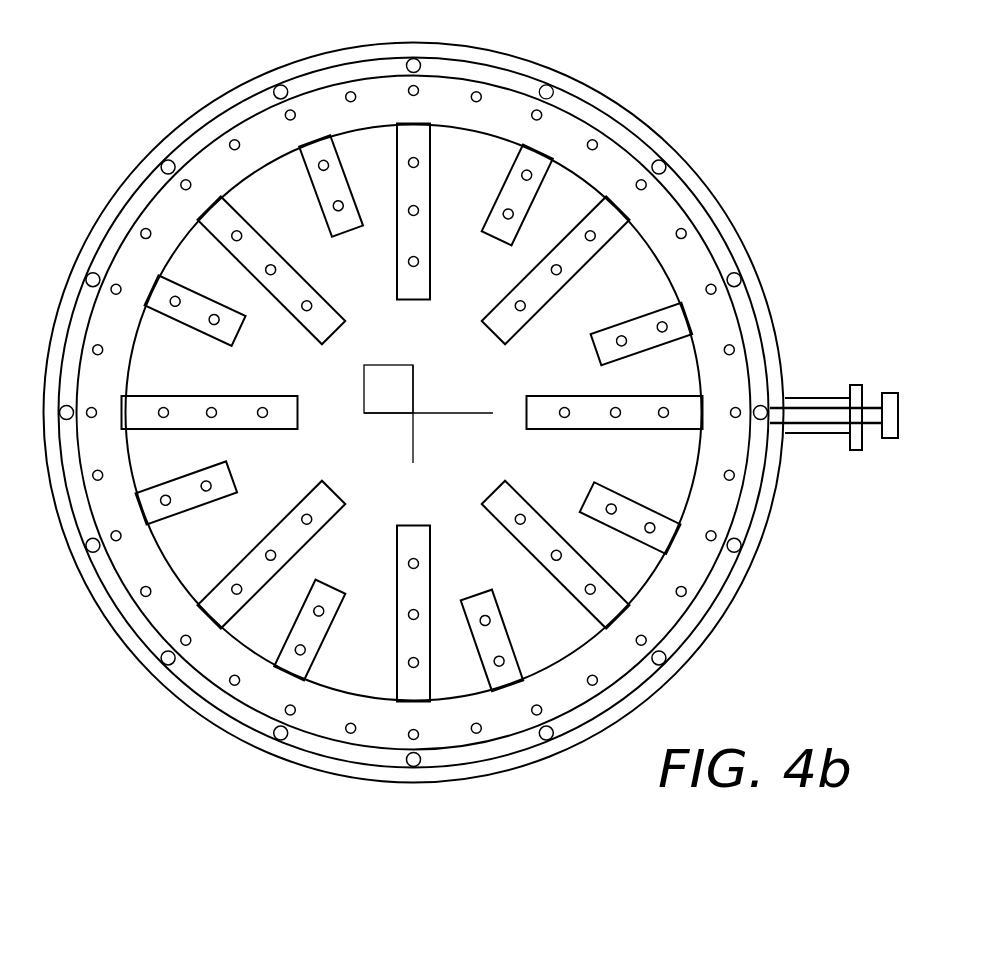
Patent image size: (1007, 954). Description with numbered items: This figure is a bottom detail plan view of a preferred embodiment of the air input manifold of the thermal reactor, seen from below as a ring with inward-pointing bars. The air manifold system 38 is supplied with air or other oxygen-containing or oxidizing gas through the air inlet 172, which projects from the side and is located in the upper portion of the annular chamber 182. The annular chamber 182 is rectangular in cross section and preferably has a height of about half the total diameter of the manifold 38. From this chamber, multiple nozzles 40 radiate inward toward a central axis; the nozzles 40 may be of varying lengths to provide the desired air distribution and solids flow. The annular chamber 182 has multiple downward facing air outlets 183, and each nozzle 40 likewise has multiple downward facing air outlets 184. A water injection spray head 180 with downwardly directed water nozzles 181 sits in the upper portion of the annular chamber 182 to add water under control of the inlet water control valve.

The air manifold system 38 is at (152, 114).
The nozzle 40 is at (528, 293).
The air inlet 172 is at (812, 398).
The water injection spray head 180 is at (692, 203).
The water nozzle 181 is at (547, 93).
The annular chamber 182 is at (643, 130).
The air outlet 183 is at (230, 683).
The air outlet 184 is at (259, 405).